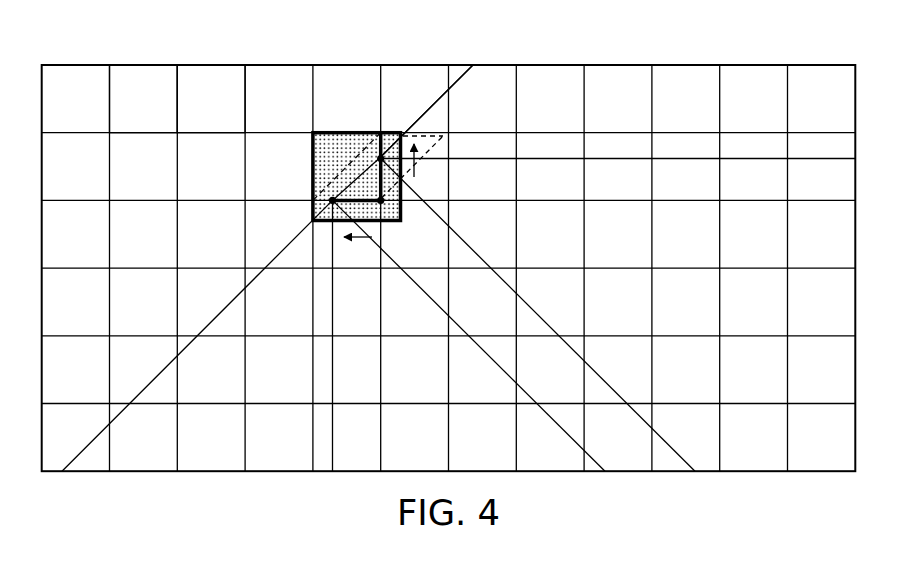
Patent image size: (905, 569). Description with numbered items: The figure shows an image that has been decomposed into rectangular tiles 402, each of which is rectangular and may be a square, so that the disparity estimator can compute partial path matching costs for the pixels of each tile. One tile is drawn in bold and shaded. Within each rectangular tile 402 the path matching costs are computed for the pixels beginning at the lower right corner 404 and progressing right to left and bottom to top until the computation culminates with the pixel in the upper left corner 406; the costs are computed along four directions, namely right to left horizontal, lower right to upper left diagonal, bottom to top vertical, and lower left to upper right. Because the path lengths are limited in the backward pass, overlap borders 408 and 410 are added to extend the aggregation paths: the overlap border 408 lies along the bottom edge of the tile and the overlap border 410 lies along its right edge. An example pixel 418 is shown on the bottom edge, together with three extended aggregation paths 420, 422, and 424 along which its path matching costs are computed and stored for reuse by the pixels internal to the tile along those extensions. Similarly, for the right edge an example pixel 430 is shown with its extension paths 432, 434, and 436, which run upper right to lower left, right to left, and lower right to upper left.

The rectangular tile 402 is at (133, 73).
The lower right corner 404 is at (396, 226).
The upper left corner 406 is at (310, 131).
The overlap border 408 is at (310, 212).
The overlap border 410 is at (396, 121).
The example pixel 418 is at (330, 198).
The extended aggregation path 420 is at (88, 449).
The extended aggregation path 422 is at (333, 450).
The extended aggregation path 424 is at (570, 444).
The example pixel 430 is at (379, 157).
The extension path 432 is at (457, 77).
The extension path 434 is at (608, 158).
The extension path 436 is at (666, 446).